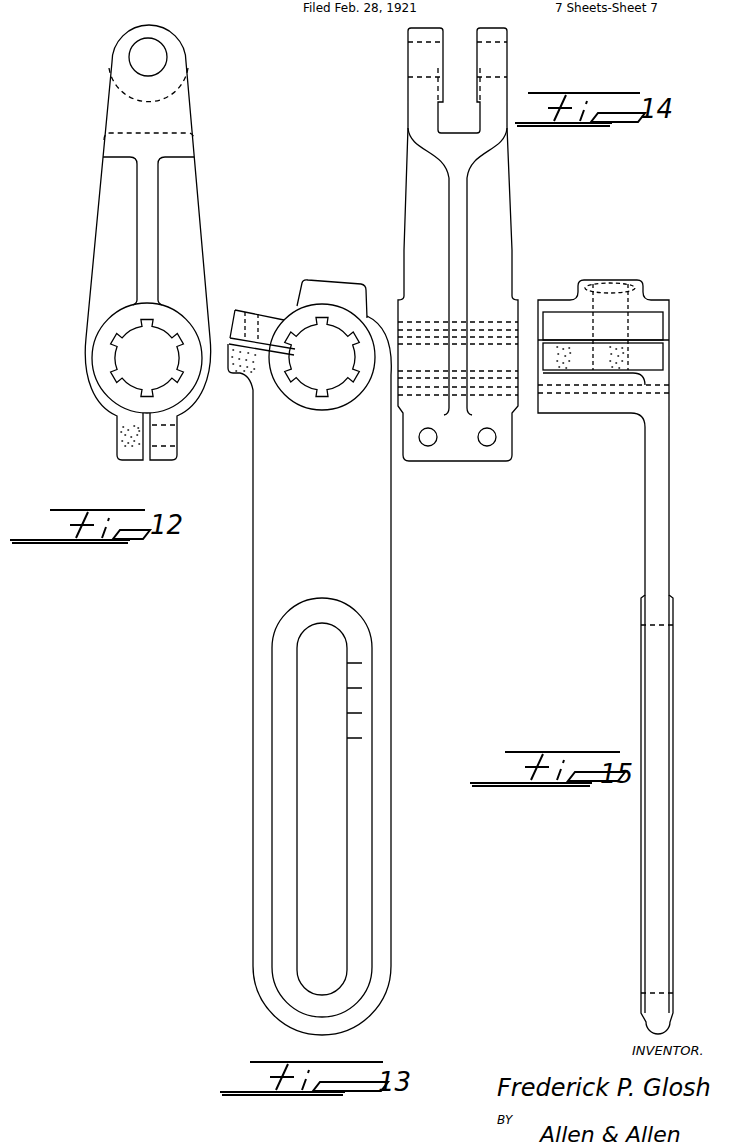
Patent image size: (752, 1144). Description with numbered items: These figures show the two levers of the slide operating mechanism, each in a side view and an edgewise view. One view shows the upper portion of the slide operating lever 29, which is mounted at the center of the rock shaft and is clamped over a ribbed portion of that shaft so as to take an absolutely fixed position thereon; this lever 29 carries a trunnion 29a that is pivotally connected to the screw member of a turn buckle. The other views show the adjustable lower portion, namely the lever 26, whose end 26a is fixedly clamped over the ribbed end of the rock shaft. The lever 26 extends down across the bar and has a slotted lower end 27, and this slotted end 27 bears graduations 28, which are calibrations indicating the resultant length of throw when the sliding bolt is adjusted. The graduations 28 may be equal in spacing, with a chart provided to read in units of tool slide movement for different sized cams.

In FIG. 13, the lever 26 is at (378, 558).
In FIG. 15, the lever 26 is at (669, 566).
In FIG. 13, the end of lever 26a is at (297, 320).
In FIG. 15, the end of lever 26a is at (637, 298).
In FIG. 13, the slotted lower end 27 is at (297, 757).
In FIG. 15, the slotted lower end 27 is at (648, 627).
In FIG. 13, the graduations 28 is at (362, 695).
In FIG. 12, the lever 29 is at (190, 248).
In FIG. 14, the lever 29 is at (510, 226).
In FIG. 12, the trunnion 29a is at (172, 110).
In FIG. 14, the trunnion 29a is at (418, 88).